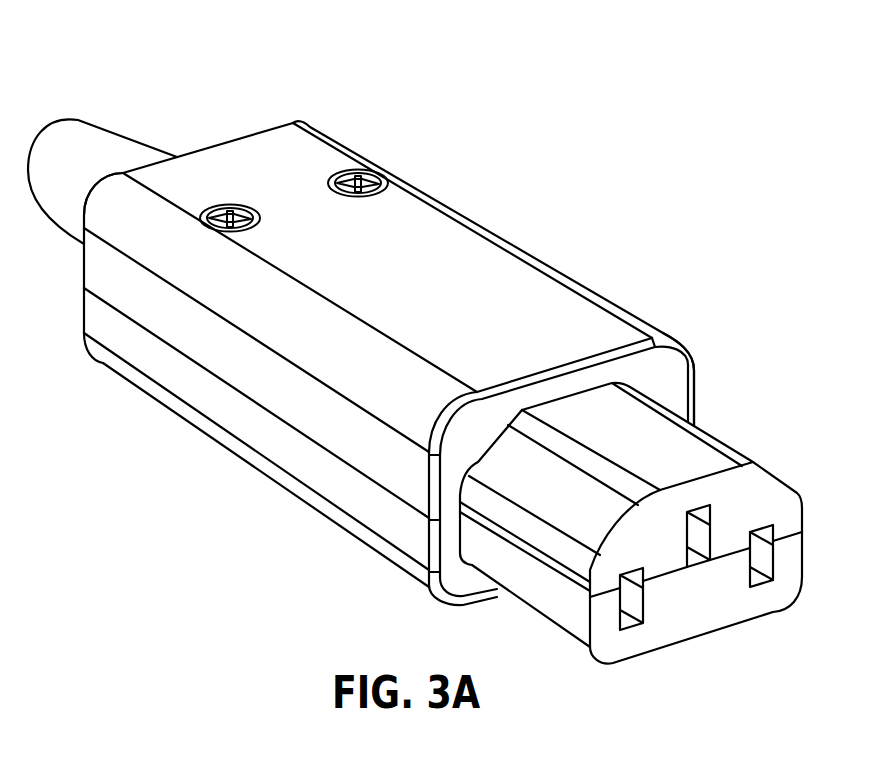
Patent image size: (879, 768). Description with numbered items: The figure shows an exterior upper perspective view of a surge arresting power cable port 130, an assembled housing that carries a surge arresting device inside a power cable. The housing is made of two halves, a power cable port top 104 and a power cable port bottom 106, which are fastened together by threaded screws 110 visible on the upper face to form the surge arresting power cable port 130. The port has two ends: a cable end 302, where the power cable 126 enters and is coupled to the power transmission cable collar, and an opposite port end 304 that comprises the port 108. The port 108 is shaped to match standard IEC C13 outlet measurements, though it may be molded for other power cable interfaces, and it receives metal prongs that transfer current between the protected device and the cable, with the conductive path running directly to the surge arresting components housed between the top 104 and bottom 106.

The power cable port top 104 is at (450, 272).
The power cable port bottom 106 is at (183, 398).
The port 108 is at (738, 508).
The screws 110 is at (372, 177).
The cable 126 is at (115, 145).
The surge arresting power cable port 130 is at (231, 507).
The cable end 302 is at (220, 90).
The port end 304 is at (715, 347).